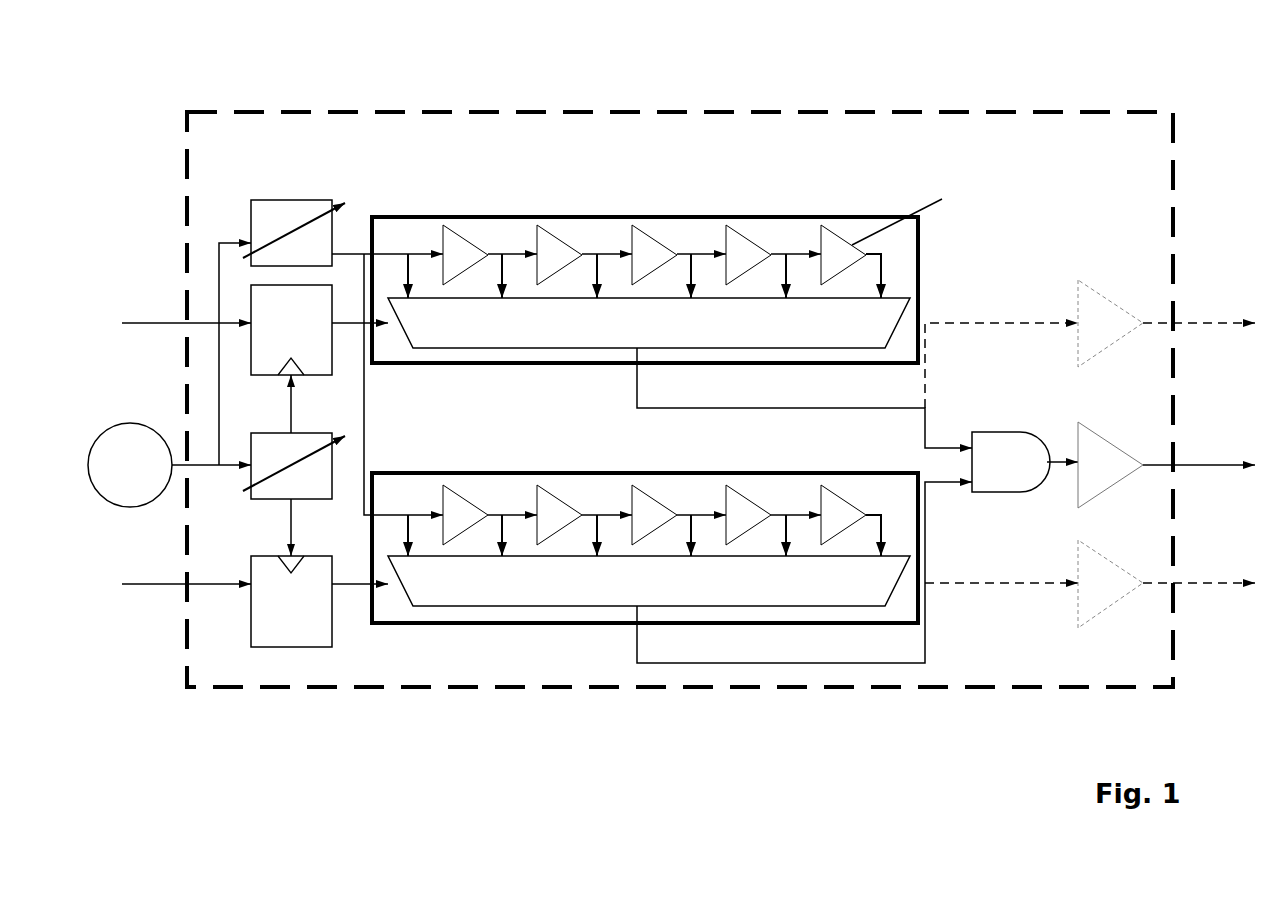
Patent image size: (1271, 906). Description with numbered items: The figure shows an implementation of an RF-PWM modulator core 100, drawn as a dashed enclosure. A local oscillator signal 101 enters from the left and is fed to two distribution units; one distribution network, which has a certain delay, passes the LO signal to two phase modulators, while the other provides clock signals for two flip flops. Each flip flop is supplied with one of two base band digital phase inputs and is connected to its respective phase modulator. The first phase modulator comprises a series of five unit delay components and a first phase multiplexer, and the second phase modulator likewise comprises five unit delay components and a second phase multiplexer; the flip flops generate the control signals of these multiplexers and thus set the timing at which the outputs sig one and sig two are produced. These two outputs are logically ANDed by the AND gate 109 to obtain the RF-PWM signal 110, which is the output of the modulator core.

The RF-PWM modulator core 100 is at (600, 107).
The Local Oscillator (LO) signal 101 is at (169, 375).
The AND gate 109 is at (1025, 462).
The RF-PWM signal 110 is at (1166, 448).